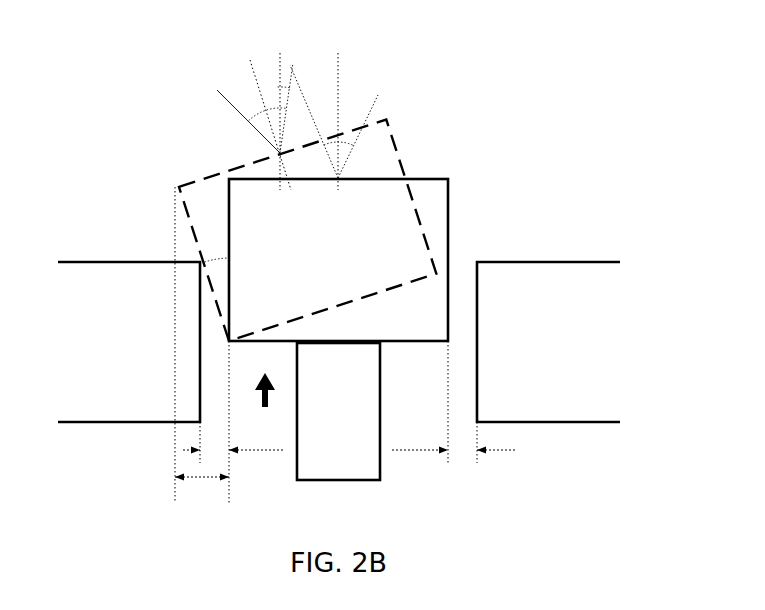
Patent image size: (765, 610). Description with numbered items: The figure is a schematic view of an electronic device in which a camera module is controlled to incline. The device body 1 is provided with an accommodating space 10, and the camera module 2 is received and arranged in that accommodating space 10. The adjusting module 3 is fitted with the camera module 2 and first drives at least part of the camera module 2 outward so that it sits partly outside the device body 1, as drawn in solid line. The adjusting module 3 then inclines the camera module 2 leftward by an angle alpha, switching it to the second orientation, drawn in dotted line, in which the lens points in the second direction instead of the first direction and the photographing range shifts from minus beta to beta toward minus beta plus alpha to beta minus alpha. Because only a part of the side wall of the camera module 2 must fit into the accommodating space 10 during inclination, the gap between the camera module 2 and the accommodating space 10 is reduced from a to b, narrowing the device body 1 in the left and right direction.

The device body 1 is at (532, 273).
The camera module 2 is at (420, 192).
The adjusting module 3 is at (365, 410).
The accommodating space 10 is at (458, 278).